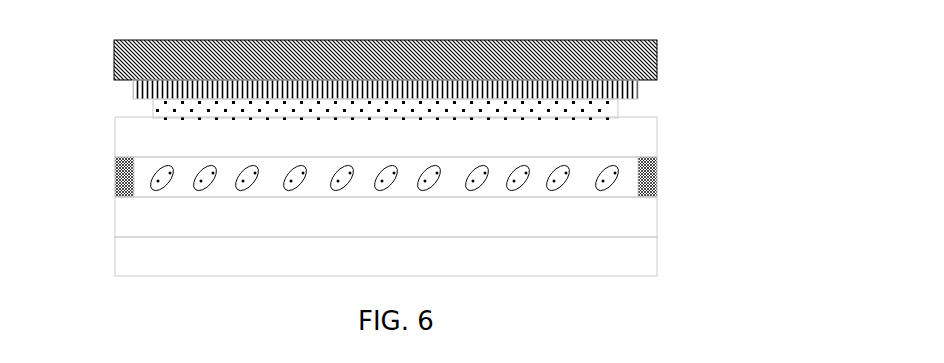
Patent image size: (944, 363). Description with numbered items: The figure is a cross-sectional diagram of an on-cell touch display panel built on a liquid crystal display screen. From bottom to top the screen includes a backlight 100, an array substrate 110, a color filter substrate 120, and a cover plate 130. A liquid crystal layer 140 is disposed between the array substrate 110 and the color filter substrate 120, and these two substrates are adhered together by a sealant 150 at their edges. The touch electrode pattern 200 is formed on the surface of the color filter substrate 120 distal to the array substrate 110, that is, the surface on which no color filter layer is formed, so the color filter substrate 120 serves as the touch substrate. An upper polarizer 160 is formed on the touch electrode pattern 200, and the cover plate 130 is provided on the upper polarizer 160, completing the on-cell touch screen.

The backlight 100 is at (657, 258).
The array substrate 110 is at (657, 222).
The color filter substrate 120 is at (657, 140).
The cover plate 130 is at (657, 55).
The liquid crystal layer 140 is at (163, 177).
The sealant 150 is at (657, 180).
The upper polarizer 160 is at (638, 88).
The touch electrode pattern 200 is at (618, 108).